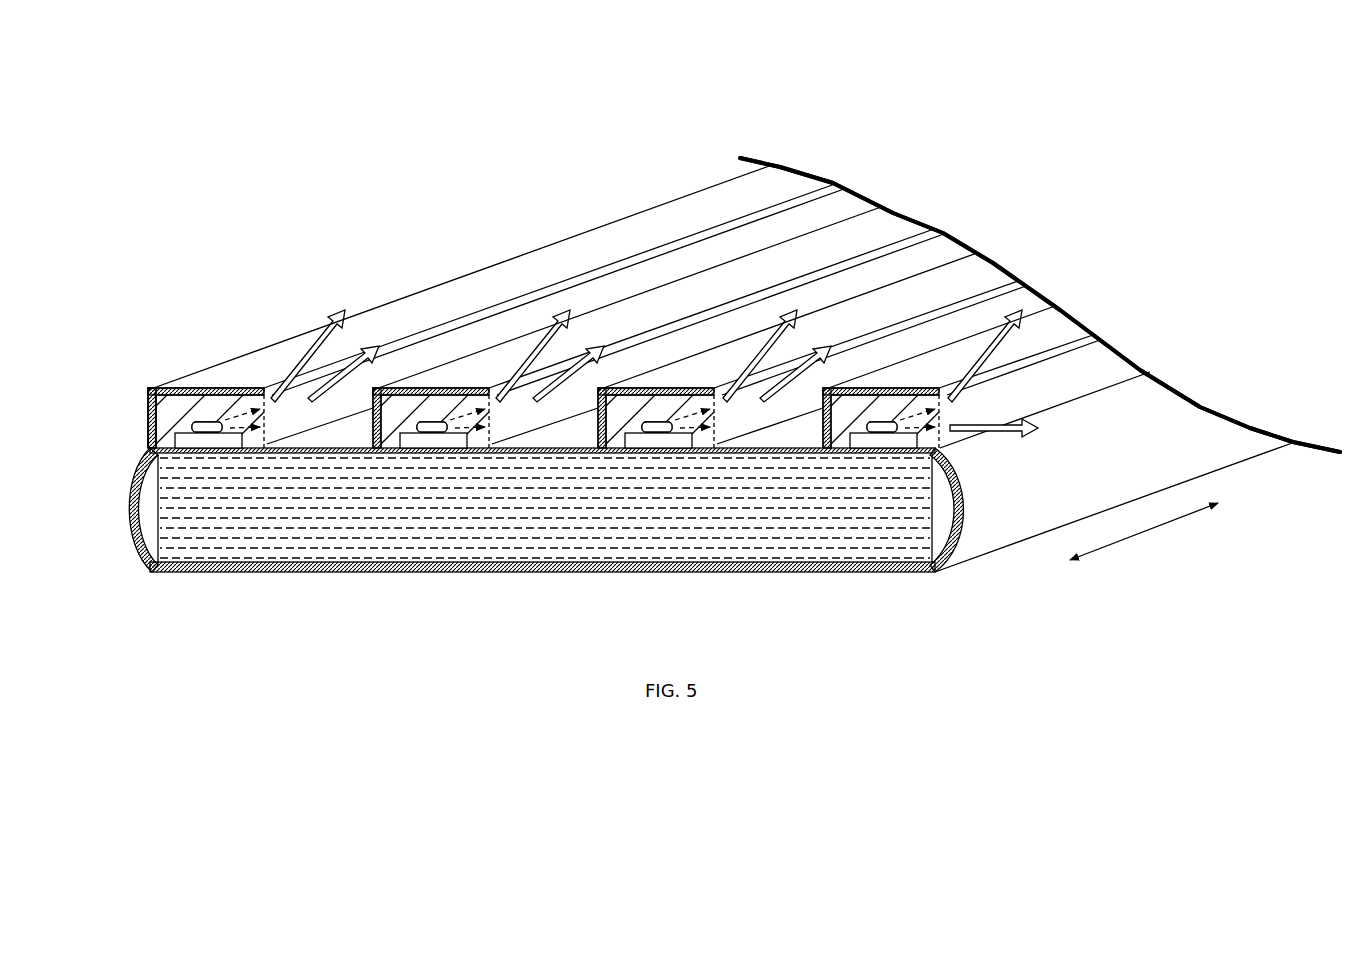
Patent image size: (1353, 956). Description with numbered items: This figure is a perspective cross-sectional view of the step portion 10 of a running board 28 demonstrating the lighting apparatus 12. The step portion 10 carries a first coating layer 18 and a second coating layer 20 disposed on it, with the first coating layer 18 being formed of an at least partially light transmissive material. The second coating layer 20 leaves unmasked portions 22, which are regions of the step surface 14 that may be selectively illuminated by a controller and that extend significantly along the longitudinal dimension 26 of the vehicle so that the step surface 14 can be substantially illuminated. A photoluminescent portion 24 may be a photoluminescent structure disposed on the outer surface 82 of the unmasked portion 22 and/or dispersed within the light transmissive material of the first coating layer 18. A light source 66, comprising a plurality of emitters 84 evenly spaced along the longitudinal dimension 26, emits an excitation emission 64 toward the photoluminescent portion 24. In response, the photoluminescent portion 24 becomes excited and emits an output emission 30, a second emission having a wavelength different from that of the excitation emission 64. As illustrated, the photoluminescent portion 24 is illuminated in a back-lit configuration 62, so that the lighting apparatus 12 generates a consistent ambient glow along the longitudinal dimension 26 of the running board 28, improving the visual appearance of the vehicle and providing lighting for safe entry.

The step portion 10 is at (237, 528).
The lighting apparatus 12 is at (698, 138).
The back-lit configuration 62 is at (1040, 305).
The step surface 14 is at (603, 222).
The first coating layer 18 is at (168, 415).
The second coating layer 20 is at (168, 390).
The unmasked portion 22 is at (364, 404).
The photoluminescent portion 24 is at (397, 370).
The longitudinal dimension 26 is at (1153, 530).
The running board 28 is at (217, 302).
The output emission 30 is at (322, 385).
The excitation emission 64 is at (235, 422).
The light source 66 is at (193, 424).
The emitters 84 is at (544, 427).
The outer surface 82 is at (631, 297).